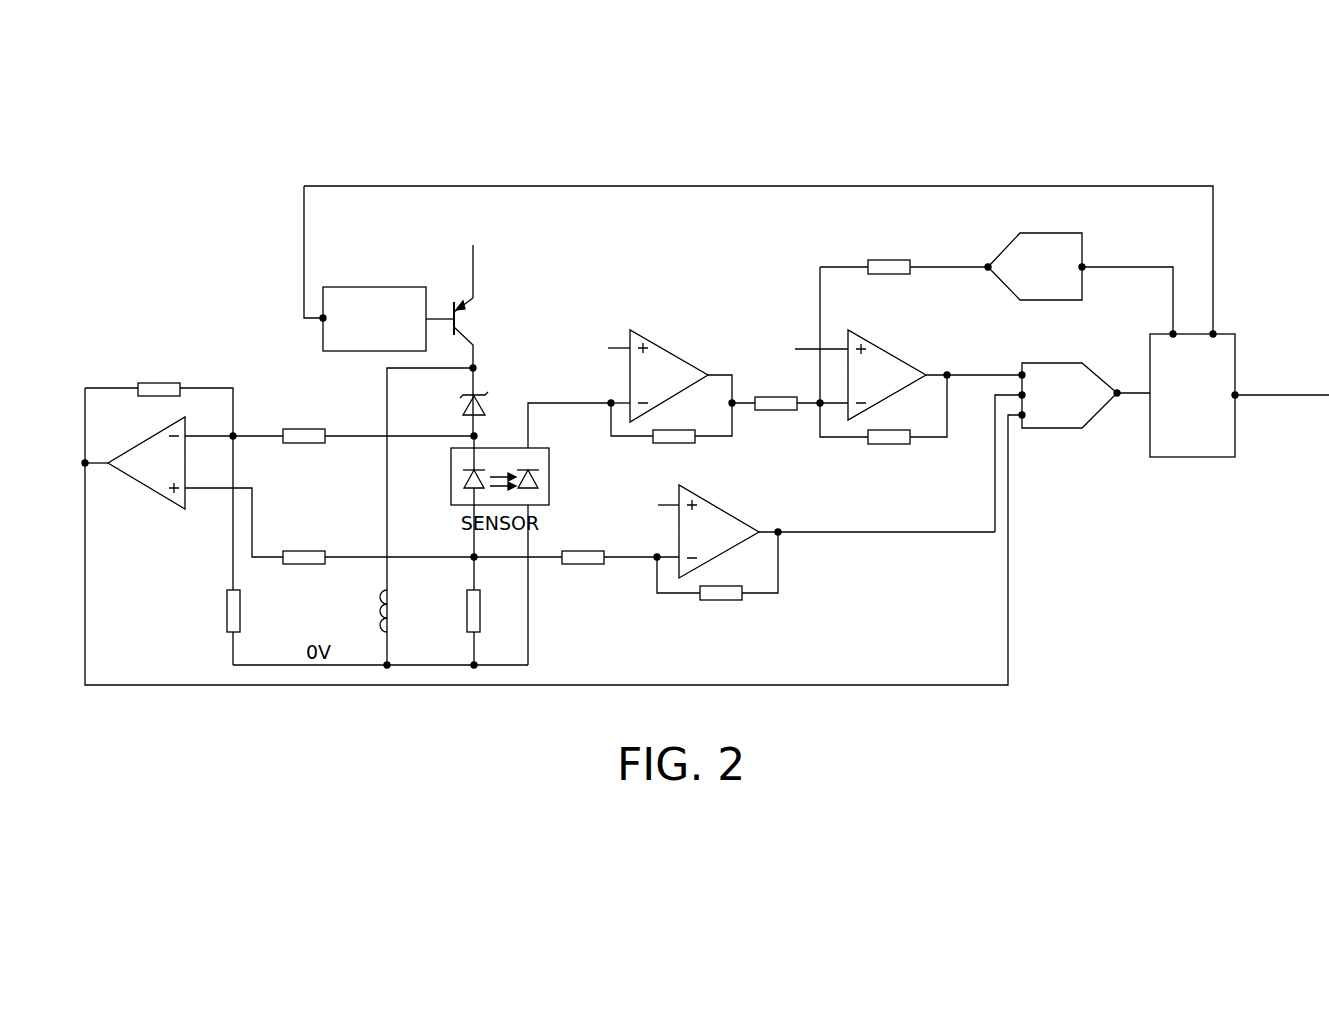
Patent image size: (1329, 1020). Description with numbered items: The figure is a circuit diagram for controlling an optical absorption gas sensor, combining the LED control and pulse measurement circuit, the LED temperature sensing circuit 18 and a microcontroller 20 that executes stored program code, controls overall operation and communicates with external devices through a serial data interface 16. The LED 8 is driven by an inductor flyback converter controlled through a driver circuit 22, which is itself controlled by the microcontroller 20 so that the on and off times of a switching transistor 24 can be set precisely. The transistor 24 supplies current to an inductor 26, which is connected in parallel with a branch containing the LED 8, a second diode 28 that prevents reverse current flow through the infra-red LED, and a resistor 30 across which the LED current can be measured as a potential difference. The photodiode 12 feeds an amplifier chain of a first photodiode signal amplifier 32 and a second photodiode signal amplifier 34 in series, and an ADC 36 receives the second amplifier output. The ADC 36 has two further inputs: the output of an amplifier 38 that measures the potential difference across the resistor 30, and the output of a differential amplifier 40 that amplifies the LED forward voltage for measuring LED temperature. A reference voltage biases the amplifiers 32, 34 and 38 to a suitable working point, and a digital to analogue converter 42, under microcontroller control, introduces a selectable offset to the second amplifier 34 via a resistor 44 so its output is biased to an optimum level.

The temperature sensing circuit 18 is at (136, 326).
The driver circuit 22 is at (372, 287).
The transistor 24 is at (476, 298).
The second diode 28 is at (482, 401).
The LED 8 is at (458, 478).
The photodiode 12 is at (537, 470).
The resistor 30 is at (478, 652).
The inductor 26 is at (392, 652).
The differential amplifier 40 is at (140, 488).
The first photodiode signal amplifier 32 is at (643, 330).
The second photodiode signal amplifier 34 is at (912, 385).
The resistor 44 is at (890, 260).
The digital to analogue converter 42 is at (1050, 233).
The ADC 36 is at (1056, 428).
The microcontroller 20 is at (1198, 457).
The serial data interface 16 is at (1273, 397).
The amplifier 38 is at (740, 545).